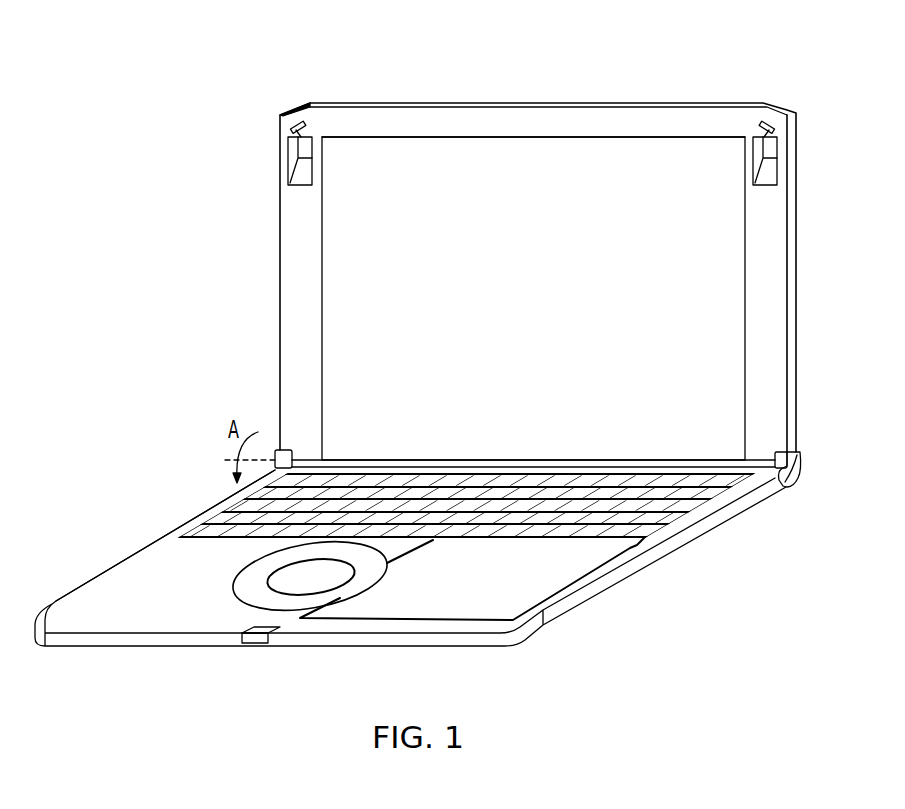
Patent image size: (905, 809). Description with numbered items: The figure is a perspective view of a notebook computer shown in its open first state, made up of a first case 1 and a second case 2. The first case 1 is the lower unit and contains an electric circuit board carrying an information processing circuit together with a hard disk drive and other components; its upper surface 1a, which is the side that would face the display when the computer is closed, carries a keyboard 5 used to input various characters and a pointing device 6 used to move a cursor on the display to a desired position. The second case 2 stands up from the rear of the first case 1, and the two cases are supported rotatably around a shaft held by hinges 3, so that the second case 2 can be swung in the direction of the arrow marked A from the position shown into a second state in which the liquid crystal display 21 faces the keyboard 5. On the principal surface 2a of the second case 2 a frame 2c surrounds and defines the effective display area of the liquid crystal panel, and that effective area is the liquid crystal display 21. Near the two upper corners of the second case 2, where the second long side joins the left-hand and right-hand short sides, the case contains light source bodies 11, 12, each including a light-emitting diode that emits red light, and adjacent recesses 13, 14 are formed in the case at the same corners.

The first case 1 is at (668, 553).
The upper surface 1a is at (97, 593).
The second case 2 is at (663, 104).
The principal surface 2a is at (437, 122).
The frame 2c is at (602, 116).
The liquid crystal display 21 is at (524, 172).
The hinge 3 is at (798, 479).
The keyboard 5 is at (218, 523).
The pointing device 6 is at (285, 580).
The light source body 11 is at (280, 117).
The light source body 12 is at (797, 121).
The recess 13 is at (300, 172).
The recess 14 is at (770, 172).